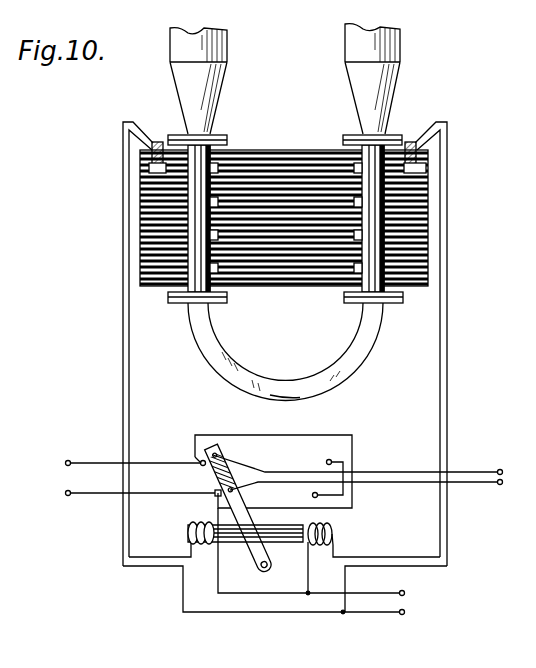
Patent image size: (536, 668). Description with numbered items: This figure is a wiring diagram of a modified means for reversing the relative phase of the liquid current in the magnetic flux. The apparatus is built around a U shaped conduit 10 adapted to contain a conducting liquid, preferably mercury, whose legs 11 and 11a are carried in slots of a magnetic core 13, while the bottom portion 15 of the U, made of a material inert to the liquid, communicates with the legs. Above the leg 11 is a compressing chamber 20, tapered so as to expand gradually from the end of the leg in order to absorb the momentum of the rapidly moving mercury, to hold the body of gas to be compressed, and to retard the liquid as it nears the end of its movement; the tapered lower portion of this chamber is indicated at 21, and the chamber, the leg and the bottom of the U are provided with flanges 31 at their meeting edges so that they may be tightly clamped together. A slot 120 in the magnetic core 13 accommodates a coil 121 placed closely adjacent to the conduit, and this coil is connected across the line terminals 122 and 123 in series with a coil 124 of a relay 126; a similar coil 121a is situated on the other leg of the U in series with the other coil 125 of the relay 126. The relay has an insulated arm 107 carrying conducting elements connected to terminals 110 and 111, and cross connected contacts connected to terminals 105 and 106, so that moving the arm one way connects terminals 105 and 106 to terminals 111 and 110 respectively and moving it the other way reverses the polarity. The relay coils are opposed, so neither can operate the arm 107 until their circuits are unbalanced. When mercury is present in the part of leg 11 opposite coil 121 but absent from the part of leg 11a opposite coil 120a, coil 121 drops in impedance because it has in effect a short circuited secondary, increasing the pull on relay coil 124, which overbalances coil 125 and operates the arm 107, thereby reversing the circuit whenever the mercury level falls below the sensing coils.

The U shaped conduit 10 is at (289, 378).
The leg 11 is at (376, 284).
The leg 11a is at (190, 284).
The magnetic core 13 is at (422, 214).
The bottom portion of U shaped conduit 15 is at (291, 396).
The compressing chamber 20 is at (403, 49).
The hopper cone 21 is at (382, 105).
The flanges 31 is at (345, 135).
The terminal 105 is at (65, 463).
The terminal 106 is at (66, 495).
The relay arm 107 is at (253, 549).
The terminal 110 is at (509, 466).
The terminal 111 is at (503, 483).
The slot 120 is at (420, 170).
The coil 120a is at (150, 170).
The coil 121 is at (410, 142).
The coil 121a is at (157, 140).
The line terminal 122 is at (412, 604).
The line terminal 123 is at (412, 585).
The relay coil 124 is at (334, 537).
The relay coil 125 is at (187, 530).
The relay 126 is at (333, 519).